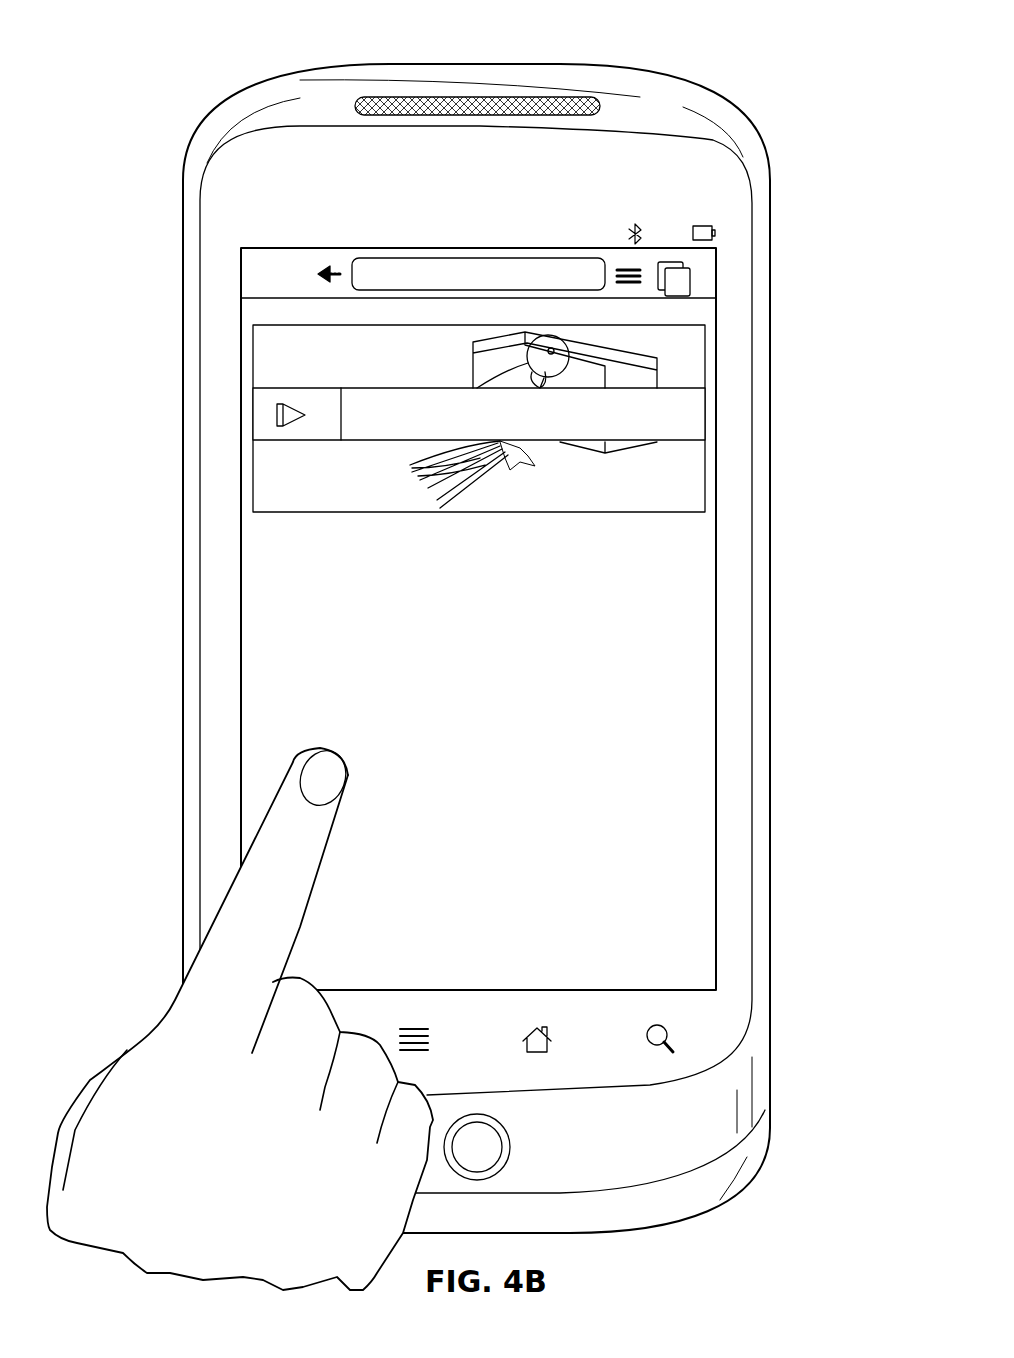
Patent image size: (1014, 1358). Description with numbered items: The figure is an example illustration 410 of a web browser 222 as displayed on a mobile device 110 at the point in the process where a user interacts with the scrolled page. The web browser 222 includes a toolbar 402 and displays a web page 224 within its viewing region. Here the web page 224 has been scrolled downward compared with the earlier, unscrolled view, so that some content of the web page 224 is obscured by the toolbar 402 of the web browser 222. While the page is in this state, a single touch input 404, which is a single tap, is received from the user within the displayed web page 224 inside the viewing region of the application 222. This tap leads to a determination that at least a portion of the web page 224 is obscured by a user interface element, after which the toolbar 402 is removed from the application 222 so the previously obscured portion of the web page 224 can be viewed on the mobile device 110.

The example illustration 410 is at (184, 58).
The mobile device 110 is at (676, 60).
The toolbar 402 is at (242, 272).
The web browser 222 is at (775, 394).
The web page 224 is at (700, 560).
The single touch input 404 is at (253, 892).